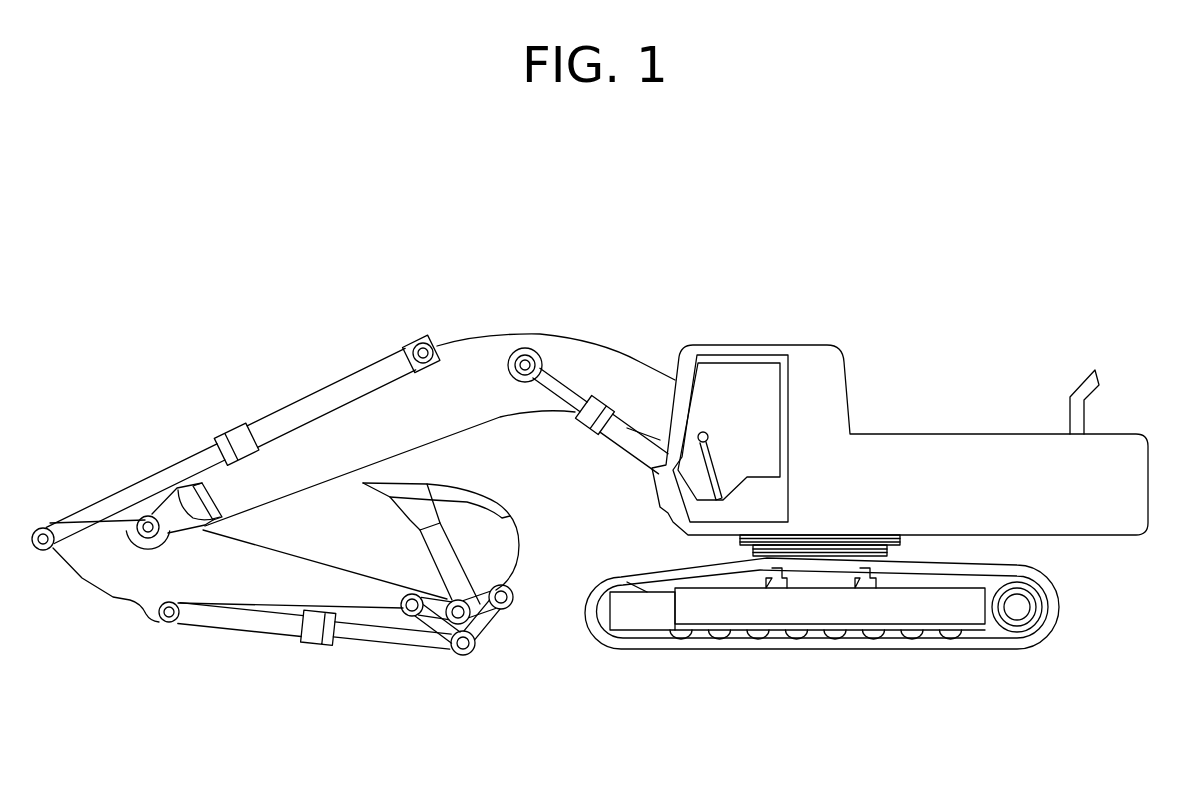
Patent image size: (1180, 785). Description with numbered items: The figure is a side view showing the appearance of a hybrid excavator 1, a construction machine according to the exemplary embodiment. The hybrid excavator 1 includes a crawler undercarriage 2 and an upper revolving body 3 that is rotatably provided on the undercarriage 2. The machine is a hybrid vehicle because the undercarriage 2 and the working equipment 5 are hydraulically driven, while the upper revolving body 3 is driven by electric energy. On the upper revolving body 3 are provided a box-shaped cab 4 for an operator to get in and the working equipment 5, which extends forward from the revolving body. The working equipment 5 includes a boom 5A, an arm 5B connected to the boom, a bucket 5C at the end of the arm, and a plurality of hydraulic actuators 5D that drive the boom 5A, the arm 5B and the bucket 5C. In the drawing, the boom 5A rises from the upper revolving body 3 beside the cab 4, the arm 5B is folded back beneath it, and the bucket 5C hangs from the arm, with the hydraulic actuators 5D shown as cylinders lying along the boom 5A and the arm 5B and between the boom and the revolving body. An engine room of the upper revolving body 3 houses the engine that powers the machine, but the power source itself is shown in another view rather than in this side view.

The hybrid excavator 1 is at (888, 236).
The crawler undercarriage 2 is at (933, 673).
The upper revolving body 3 is at (888, 405).
The cab 4 is at (808, 346).
The working equipment 5 is at (357, 317).
The boom 5A is at (567, 352).
The arm 5B is at (95, 575).
The bucket 5C is at (498, 543).
The hydraulic actuators 5D is at (308, 408).